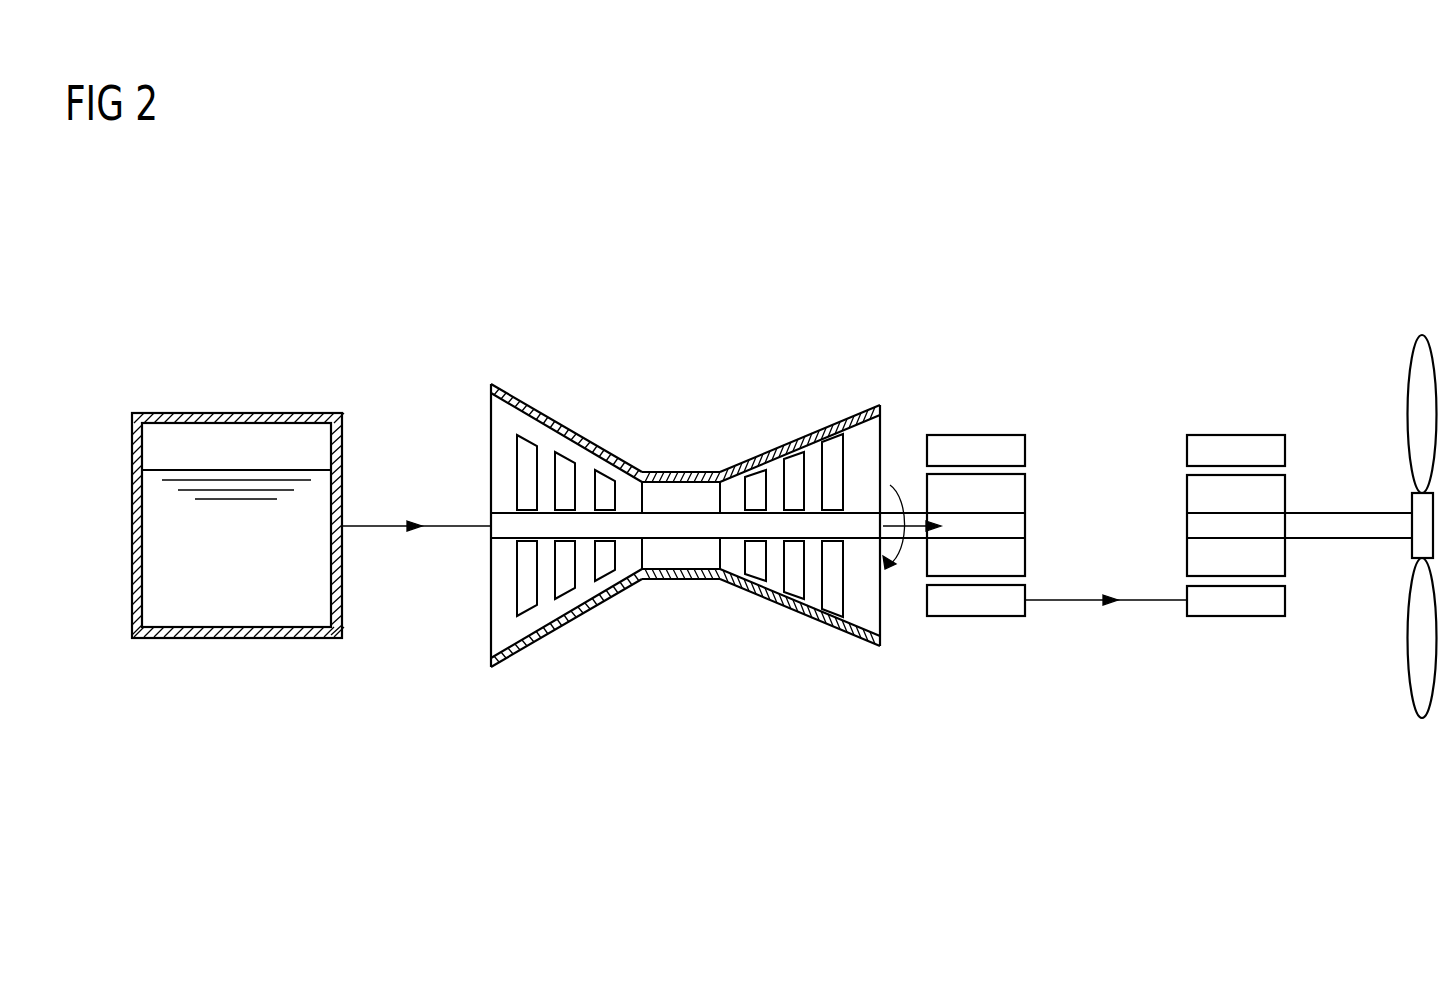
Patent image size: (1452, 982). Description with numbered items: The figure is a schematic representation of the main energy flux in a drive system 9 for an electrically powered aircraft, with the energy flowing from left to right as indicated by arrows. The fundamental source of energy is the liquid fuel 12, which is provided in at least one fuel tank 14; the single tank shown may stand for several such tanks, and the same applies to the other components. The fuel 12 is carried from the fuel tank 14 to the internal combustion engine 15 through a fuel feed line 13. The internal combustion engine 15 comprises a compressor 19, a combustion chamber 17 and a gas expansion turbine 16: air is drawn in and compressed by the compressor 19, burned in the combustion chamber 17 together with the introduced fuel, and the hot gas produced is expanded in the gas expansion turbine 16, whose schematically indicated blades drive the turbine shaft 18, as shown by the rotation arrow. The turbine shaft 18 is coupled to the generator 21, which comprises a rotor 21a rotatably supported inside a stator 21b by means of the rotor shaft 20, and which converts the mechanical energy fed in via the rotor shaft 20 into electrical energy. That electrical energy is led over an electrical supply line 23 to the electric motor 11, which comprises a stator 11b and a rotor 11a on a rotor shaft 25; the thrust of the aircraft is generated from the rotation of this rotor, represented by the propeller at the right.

The drive system 9 is at (449, 307).
The electric motor 11 is at (1285, 378).
The rotor 11a is at (1187, 490).
The stator 11b is at (1187, 447).
The liquid fuel 12 is at (252, 579).
The fuel feed line 13 is at (378, 528).
The fuel tank 14 is at (241, 638).
The internal combustion engine 15 is at (878, 378).
The gas expansion turbine 16 is at (584, 618).
The combustion chamber 17 is at (686, 580).
The turbine shaft 18 is at (735, 527).
The compressor 19 is at (803, 613).
The rotor shaft 20 is at (1020, 523).
The generator 21 is at (1025, 378).
The rotor 21a is at (1025, 560).
The stator 21b is at (1025, 617).
The electrical connection 23 is at (1145, 601).
The rotor shaft 25 is at (1345, 539).